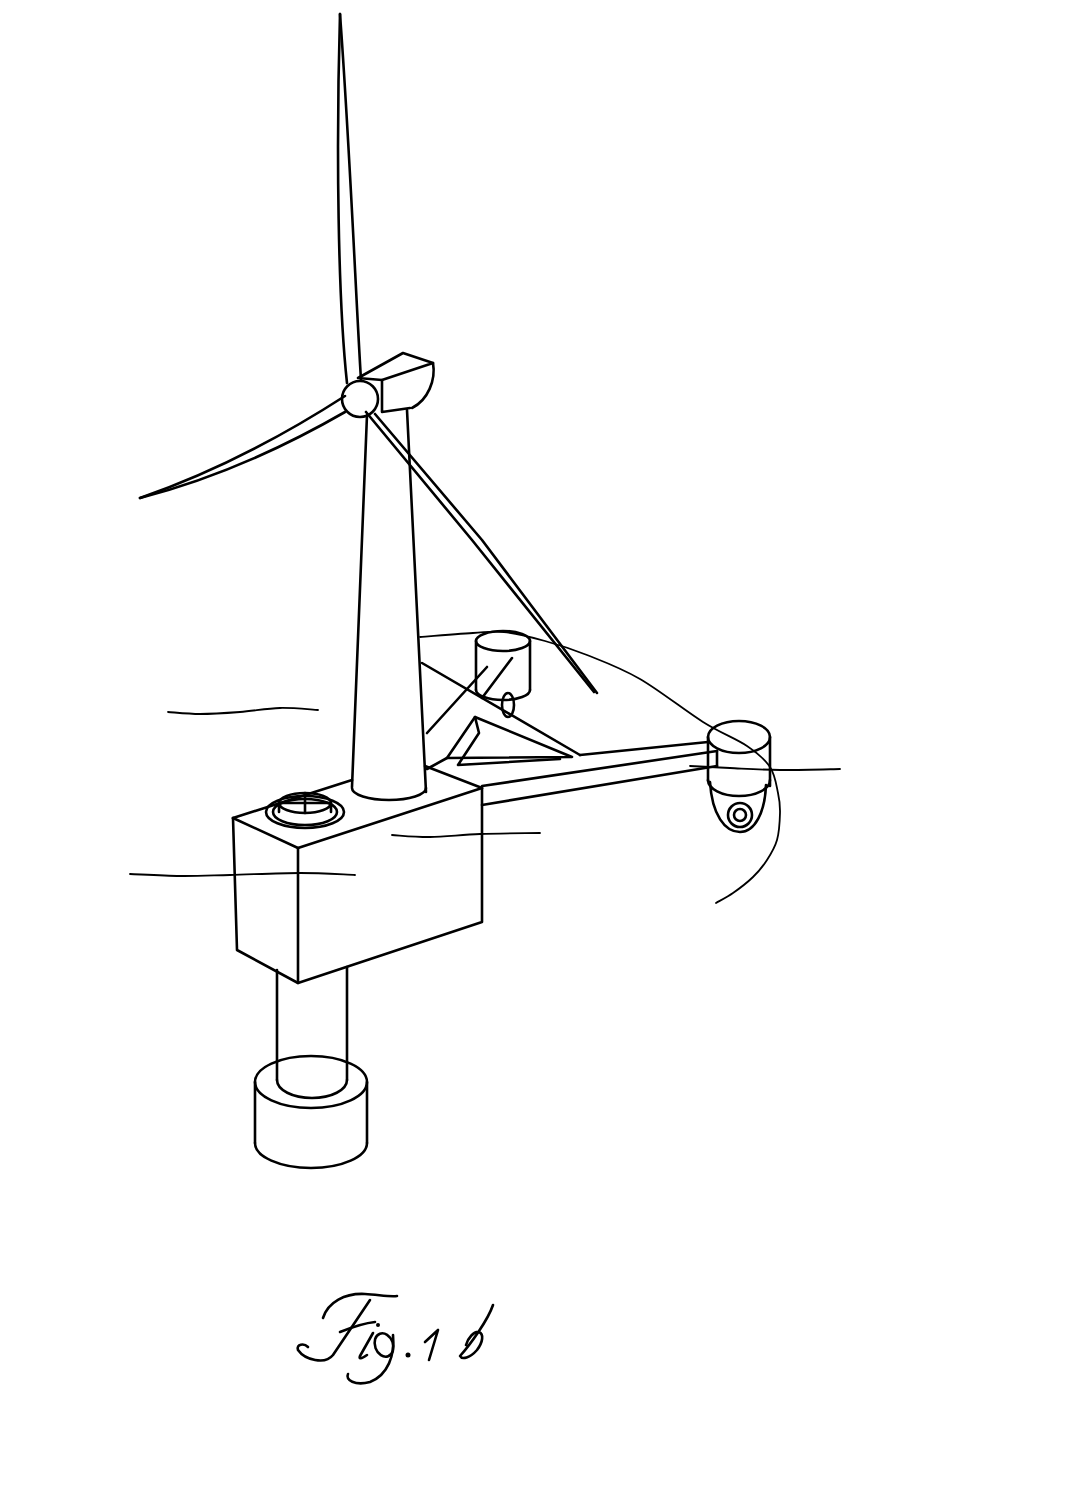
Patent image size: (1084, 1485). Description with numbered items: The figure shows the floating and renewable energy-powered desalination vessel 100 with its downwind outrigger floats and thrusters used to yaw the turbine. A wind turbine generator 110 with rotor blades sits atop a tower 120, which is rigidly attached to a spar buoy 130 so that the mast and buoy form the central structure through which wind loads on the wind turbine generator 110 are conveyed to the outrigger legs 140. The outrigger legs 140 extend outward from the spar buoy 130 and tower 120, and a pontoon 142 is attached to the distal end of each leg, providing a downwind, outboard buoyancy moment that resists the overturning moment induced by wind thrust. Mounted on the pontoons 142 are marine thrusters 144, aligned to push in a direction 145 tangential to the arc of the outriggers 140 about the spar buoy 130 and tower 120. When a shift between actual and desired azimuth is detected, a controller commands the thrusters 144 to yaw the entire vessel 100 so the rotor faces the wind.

The floating and renewable energy-powered desalination vessel 100 is at (622, 351).
The wind turbine generator 110 is at (428, 360).
The tower 120 is at (362, 550).
The spar buoy 130 is at (217, 875).
The outrigger leg 140 is at (552, 797).
The pontoon 142 is at (512, 630).
The marine thruster 144 is at (515, 705).
The thrust direction 145 is at (355, 641).